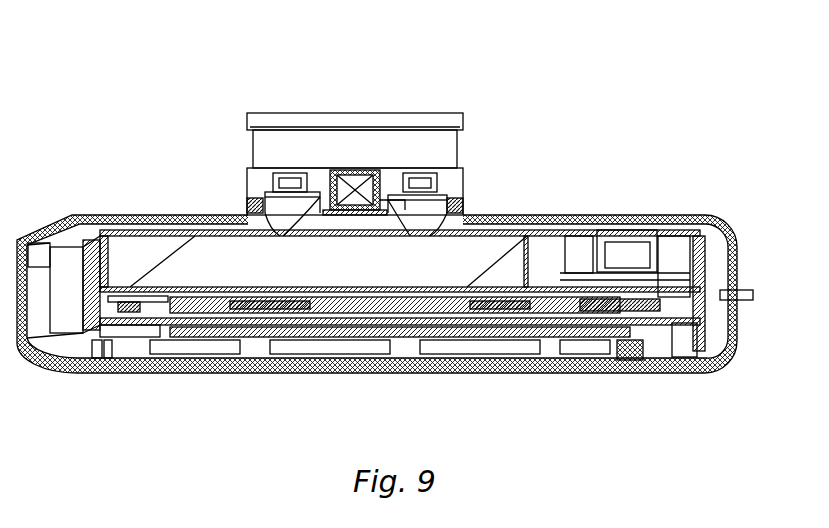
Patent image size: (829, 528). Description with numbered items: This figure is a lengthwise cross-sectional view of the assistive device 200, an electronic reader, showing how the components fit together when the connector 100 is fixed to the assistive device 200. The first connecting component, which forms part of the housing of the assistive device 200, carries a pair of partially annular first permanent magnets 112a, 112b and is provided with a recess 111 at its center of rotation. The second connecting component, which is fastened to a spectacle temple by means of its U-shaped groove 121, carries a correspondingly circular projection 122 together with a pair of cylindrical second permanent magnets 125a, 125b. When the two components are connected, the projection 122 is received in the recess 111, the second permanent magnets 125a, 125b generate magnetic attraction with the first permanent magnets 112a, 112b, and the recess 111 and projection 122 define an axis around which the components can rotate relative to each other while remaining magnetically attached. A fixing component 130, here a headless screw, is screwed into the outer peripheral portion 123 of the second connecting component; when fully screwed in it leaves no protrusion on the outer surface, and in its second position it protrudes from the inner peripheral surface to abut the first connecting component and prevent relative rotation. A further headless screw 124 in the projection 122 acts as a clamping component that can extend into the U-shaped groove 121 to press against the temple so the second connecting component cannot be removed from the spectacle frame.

The connector 100 is at (352, 227).
The recess 111 is at (323, 213).
The first permanent magnet 112a is at (398, 202).
The first permanent magnet 112b is at (290, 202).
The U-shaped groove 121 is at (333, 143).
The projection 122 is at (398, 202).
The outer peripheral portion 123 is at (245, 207).
The headless screw 124 is at (370, 167).
The second permanent magnet 125a is at (440, 185).
The second permanent magnet 125b is at (275, 193).
The fixing component 130 is at (262, 205).
The assistive device 200 is at (683, 372).